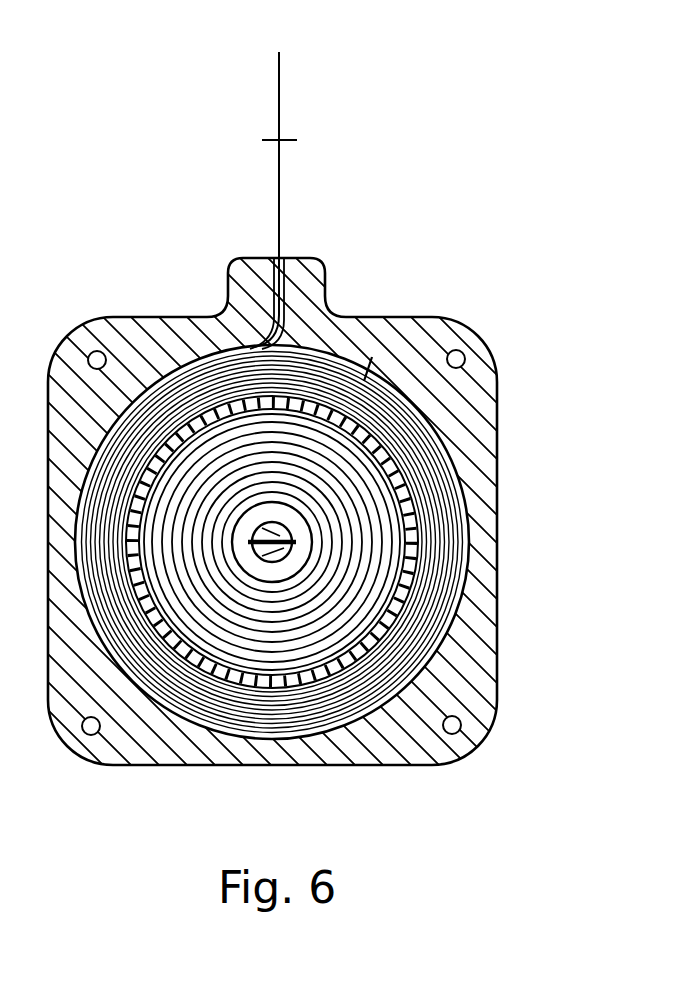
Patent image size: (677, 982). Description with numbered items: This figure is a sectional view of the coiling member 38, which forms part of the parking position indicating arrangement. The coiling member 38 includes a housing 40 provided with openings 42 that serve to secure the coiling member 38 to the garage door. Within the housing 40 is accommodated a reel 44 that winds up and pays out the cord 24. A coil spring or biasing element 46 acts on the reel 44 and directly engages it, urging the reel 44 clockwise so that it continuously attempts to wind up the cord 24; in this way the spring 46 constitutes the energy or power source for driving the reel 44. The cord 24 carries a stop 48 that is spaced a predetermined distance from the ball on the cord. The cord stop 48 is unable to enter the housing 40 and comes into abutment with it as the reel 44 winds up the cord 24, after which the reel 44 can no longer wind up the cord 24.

The cord 24 is at (281, 85).
The coiling member 38 is at (340, 491).
The housing 40 is at (498, 408).
The openings 42 is at (97, 352).
The reel 44 is at (416, 494).
The coil spring 46 is at (366, 550).
The stop 48 is at (296, 145).